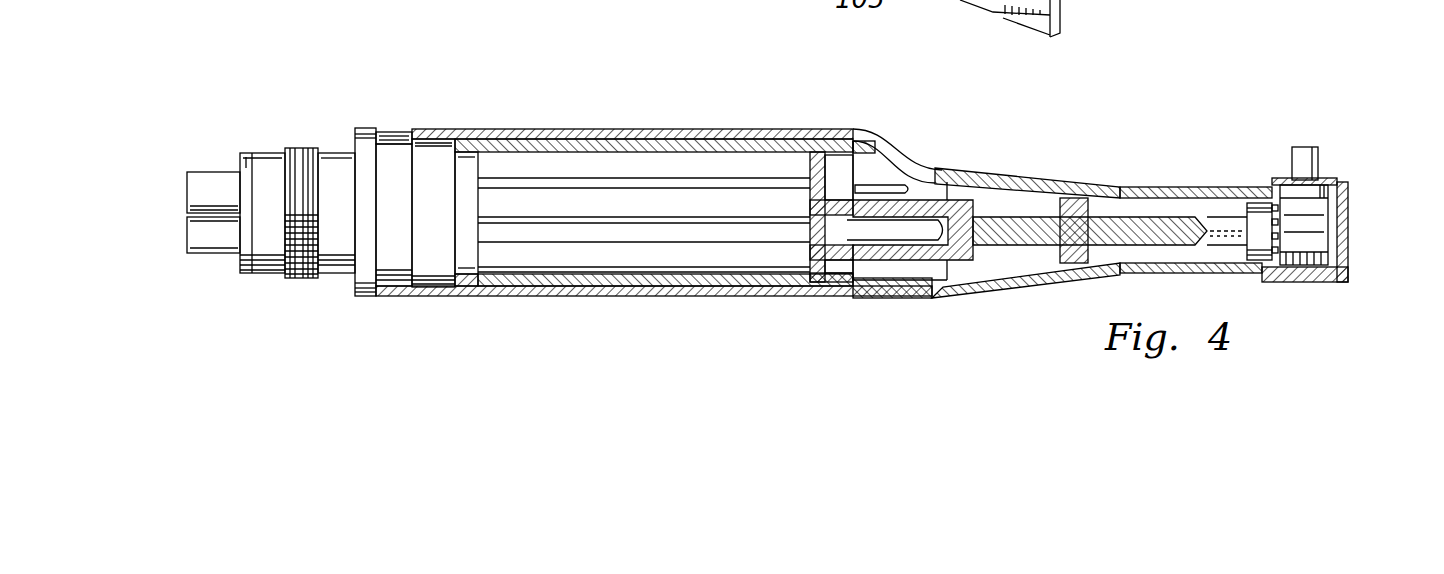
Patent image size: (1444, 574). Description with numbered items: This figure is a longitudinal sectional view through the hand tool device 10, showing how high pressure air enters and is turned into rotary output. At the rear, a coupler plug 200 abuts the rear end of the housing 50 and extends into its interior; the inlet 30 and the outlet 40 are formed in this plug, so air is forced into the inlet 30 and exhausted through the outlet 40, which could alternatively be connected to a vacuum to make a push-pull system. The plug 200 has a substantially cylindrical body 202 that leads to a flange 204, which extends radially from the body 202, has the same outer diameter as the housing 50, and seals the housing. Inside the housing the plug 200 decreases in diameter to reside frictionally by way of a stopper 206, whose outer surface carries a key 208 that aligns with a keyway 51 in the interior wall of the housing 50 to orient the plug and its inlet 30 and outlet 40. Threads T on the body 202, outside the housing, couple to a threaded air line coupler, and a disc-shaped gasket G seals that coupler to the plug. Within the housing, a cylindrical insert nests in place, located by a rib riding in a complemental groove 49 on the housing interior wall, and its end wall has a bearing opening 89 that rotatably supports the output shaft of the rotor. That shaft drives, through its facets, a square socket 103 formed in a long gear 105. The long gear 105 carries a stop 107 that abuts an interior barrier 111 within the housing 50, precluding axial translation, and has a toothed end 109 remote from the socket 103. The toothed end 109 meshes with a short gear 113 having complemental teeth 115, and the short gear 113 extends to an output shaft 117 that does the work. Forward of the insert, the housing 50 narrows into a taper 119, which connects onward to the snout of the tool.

The hand tool device 10 is at (1198, 102).
The inlet 30 is at (220, 250).
The outlet 40 is at (222, 180).
The groove 49 is at (660, 139).
The housing 50 is at (584, 118).
The keyway 51 is at (410, 138).
The bearing opening 89 is at (837, 200).
The square socket 103 is at (947, 228).
The long gear 105 is at (1223, 230).
The stop 107 is at (1073, 258).
The toothed end 109 is at (1257, 251).
The interior barrier 111 is at (1090, 198).
The short gear 113 is at (1317, 212).
The complemental teeth 115 is at (1337, 260).
The output shaft 117 is at (1312, 162).
The taper 119 is at (907, 150).
The coupler plug 200 is at (282, 105).
The body 202 is at (268, 274).
The flange 204 is at (363, 291).
The stopper 206 is at (398, 153).
The key 208 is at (393, 130).
The gasket G is at (246, 157).
The threads T is at (299, 153).